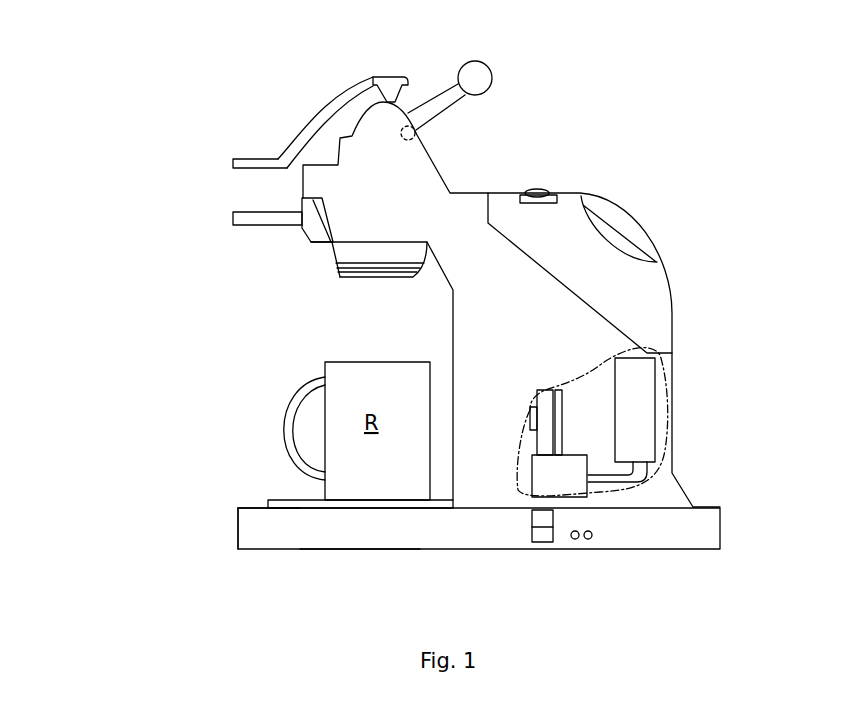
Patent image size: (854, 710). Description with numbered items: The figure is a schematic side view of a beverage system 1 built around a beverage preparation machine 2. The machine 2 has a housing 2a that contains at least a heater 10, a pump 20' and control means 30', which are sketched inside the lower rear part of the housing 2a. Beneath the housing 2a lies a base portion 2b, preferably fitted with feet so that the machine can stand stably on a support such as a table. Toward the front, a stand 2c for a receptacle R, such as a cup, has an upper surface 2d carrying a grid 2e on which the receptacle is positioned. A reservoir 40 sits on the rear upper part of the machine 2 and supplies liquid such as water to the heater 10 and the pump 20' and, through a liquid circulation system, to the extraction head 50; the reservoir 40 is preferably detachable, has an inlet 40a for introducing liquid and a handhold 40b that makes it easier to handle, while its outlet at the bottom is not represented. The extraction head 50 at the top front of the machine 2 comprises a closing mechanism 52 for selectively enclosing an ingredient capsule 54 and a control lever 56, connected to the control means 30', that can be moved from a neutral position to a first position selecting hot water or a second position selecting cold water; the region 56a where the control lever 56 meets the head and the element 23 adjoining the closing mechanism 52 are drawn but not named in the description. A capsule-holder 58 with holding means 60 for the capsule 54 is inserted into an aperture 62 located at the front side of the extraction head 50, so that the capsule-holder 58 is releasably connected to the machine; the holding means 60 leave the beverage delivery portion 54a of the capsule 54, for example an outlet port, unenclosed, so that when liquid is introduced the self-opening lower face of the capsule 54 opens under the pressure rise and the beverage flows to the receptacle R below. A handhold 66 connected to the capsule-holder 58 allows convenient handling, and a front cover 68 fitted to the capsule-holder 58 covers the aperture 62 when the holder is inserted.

The beverage system 1 is at (152, 105).
The beverage preparation machine 2 is at (540, 132).
The housing 2a is at (490, 487).
The base portion 2b is at (367, 550).
The stand 2c is at (270, 537).
The upper surface 2d is at (292, 507).
The grid 2e is at (277, 495).
The heater 10 is at (643, 403).
The pump 20' is at (601, 523).
The control means 30' is at (569, 467).
The reservoir 40 is at (638, 287).
The inlet 40a is at (547, 189).
The handhold 40b is at (625, 220).
The extraction head 50 is at (382, 137).
The closing mechanism 52 is at (316, 107).
The ingredient capsule 54 is at (338, 252).
The beverage delivery portion 54a is at (384, 277).
The control lever 56 is at (478, 75).
The lever pivot 56a is at (412, 112).
The capsule-holder 58 is at (302, 228).
The holding means 60 is at (337, 257).
The aperture 62 is at (327, 227).
The handhold 66 is at (233, 216).
The front cover 68 is at (300, 210).
The bar 23 is at (310, 187).